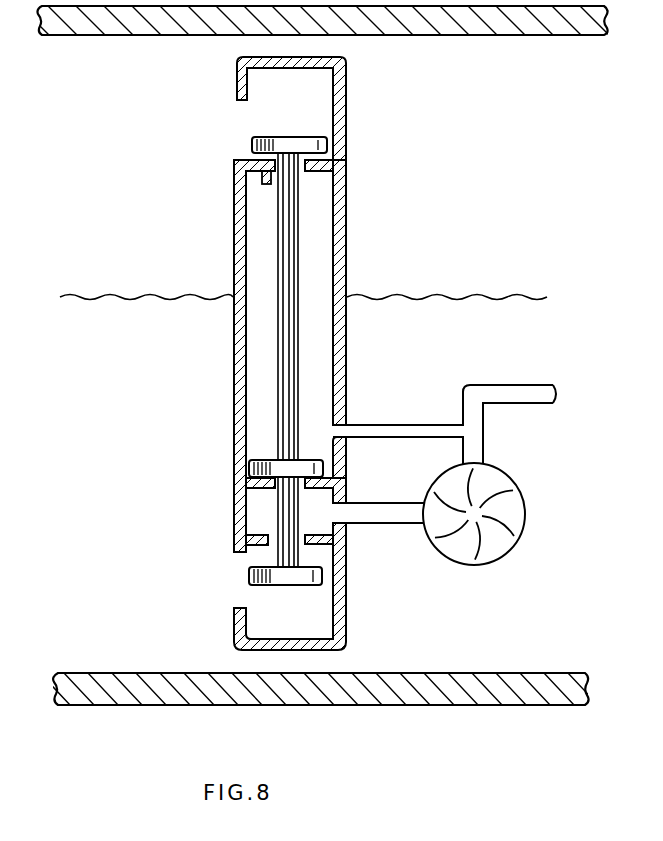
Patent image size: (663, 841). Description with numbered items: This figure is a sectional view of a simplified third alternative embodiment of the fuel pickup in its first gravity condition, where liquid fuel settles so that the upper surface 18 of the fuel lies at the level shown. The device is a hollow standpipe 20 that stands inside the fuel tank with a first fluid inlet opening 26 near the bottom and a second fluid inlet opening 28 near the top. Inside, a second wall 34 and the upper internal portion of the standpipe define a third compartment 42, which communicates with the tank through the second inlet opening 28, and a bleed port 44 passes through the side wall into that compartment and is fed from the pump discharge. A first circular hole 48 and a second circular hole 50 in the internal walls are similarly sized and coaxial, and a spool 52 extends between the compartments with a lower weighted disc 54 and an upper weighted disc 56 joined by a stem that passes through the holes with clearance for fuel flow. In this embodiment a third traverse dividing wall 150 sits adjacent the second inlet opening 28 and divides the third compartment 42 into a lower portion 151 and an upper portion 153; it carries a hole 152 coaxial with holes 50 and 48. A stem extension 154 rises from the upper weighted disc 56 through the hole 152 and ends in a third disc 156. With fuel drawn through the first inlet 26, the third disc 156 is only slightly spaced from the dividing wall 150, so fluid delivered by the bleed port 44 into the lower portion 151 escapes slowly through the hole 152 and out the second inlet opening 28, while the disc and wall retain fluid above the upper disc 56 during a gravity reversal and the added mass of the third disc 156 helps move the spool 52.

The upper surface 18 is at (474, 289).
The standpipe 20 is at (289, 353).
The first fluid inlet opening 26 is at (271, 591).
The second fluid inlet opening 28 is at (290, 108).
The second wall 34 is at (247, 475).
The third compartment 42 is at (312, 322).
The bleed port 44 is at (331, 432).
The first circular hole 48 is at (270, 545).
The second circular hole 50 is at (275, 489).
The spool 52 is at (297, 517).
The lower weighted disc 54 is at (297, 585).
The upper weighted disc 56 is at (258, 460).
The third traverse dividing wall 150 is at (237, 160).
The lower portion 151 is at (320, 193).
The hole 152 is at (268, 172).
The upper portion 153 is at (316, 100).
The stem extension 154 is at (281, 243).
The third disc 156 is at (298, 138).